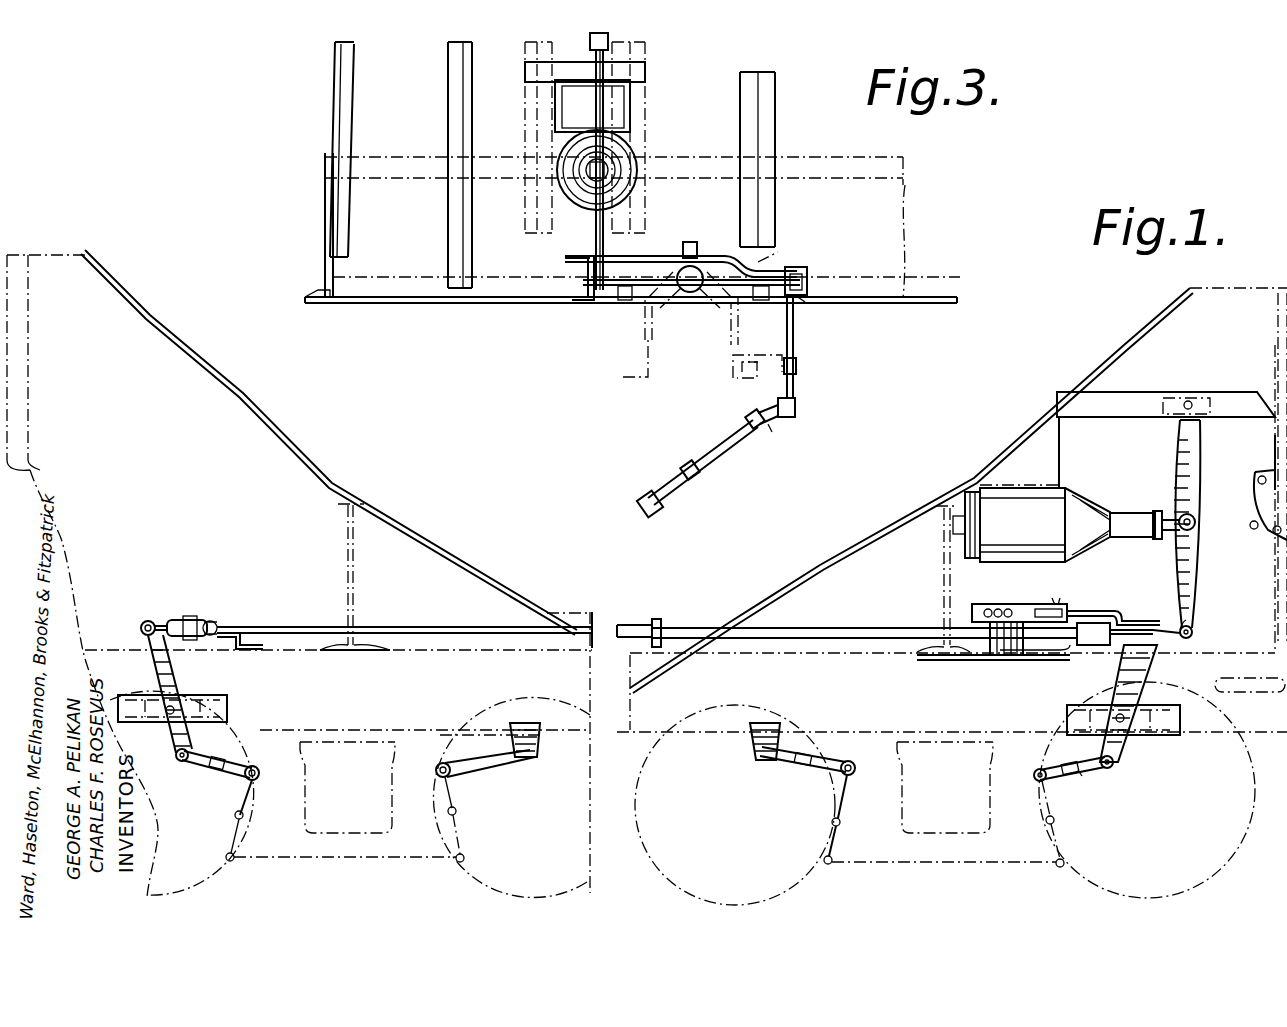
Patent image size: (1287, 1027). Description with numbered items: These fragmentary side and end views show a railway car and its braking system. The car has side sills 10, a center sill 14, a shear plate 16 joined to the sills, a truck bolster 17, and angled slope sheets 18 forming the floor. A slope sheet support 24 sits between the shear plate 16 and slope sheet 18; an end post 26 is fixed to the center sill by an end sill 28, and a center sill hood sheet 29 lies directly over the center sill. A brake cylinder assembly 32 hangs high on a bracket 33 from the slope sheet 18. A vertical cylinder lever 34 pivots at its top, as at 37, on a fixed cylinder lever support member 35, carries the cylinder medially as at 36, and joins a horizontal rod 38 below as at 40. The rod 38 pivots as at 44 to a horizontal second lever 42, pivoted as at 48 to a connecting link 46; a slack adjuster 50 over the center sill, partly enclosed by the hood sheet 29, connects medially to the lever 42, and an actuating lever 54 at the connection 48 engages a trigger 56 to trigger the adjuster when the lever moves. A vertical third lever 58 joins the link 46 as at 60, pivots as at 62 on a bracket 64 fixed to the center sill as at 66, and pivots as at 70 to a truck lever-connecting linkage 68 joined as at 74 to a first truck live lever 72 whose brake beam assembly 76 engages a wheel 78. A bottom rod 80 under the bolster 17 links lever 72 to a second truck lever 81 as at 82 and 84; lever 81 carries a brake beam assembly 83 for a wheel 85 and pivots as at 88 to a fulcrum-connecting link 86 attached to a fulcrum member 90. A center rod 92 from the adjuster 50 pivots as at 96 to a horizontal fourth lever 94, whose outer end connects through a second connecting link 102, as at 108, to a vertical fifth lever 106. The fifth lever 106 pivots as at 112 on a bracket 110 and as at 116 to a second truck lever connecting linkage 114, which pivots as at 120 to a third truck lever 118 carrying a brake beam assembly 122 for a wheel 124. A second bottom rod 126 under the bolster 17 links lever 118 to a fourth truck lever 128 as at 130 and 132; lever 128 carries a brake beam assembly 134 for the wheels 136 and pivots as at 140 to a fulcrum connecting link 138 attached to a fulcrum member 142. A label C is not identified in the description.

In FIG. 3, the side sills 10 is at (308, 298).
In FIG. 3, the center sill 14 is at (633, 358).
In FIG. 1, the center sill 14 is at (402, 693).
In FIG. 1, the shear plate 16 is at (300, 652).
In FIG. 1, the truck bolster 17 is at (304, 826).
In FIG. 1, the slope sheets 18 is at (265, 412).
In FIG. 1, the slope sheet support 24 is at (345, 570).
In FIG. 1, the end post 26 is at (1268, 437).
In FIG. 1, the end sill 28 is at (1255, 665).
In FIG. 3, the center sill hood sheet 29 is at (776, 260).
In FIG. 1, the center sill hood sheet 29 is at (583, 612).
In FIG. 3, the brake cylinder assembly 32 is at (580, 185).
In FIG. 1, the brake cylinder assembly 32 is at (1010, 547).
In FIG. 3, the bracket 33 is at (555, 107).
In FIG. 1, the bracket 33 is at (1043, 455).
In FIG. 3, the cylinder lever 34 is at (605, 115).
In FIG. 1, the cylinder lever 34 is at (1198, 560).
In FIG. 3, the cylinder lever support member 35 is at (622, 72).
In FIG. 1, the cylinder lever support member 35 is at (1132, 396).
In FIG. 3, the connection 36 is at (606, 170).
In FIG. 1, the connection 36 is at (1180, 520).
In FIG. 3, the pivotal connection 37 is at (588, 42).
In FIG. 1, the pivotal connection 37 is at (1192, 402).
In FIG. 3, the rod 38 is at (562, 262).
In FIG. 1, the rod 38 is at (1193, 640).
In FIG. 1, the connection 40 is at (1192, 630).
In FIG. 3, the second lever 42 is at (640, 287).
In FIG. 1, the second lever 42 is at (1080, 645).
In FIG. 3, the pivotal connection 44 is at (586, 294).
In FIG. 3, the connecting link 46 is at (804, 277).
In FIG. 3, the pivotal connection 48 is at (797, 268).
In FIG. 3, the brake regulator 50 is at (688, 292).
In FIG. 1, the brake regulator 50 is at (758, 640).
In FIG. 3, the actuating lever 54 is at (655, 256).
In FIG. 1, the actuating lever 54 is at (1105, 609).
In FIG. 3, the trigger 56 is at (692, 258).
In FIG. 1, the trigger 56 is at (1075, 603).
In FIG. 3, the third lever 58 is at (795, 340).
In FIG. 1, the third lever 58 is at (1147, 676).
In FIG. 3, the connection 60 is at (798, 298).
In FIG. 3, the pivot 62 is at (797, 368).
In FIG. 1, the pivot 62 is at (1124, 722).
In FIG. 3, the bracket 64 is at (758, 355).
In FIG. 1, the bracket 64 is at (1150, 724).
In FIG. 3, the attachment 66 is at (733, 362).
In FIG. 3, the truck lever-connecting linkage 68 is at (775, 420).
In FIG. 1, the truck lever-connecting linkage 68 is at (1080, 772).
In FIG. 3, the pivotal connection 70 is at (797, 408).
In FIG. 1, the pivotal connection 70 is at (1112, 767).
In FIG. 3, the first truck live lever 72 is at (677, 495).
In FIG. 1, the first truck live lever 72 is at (1054, 845).
In FIG. 3, the connection 74 is at (746, 420).
In FIG. 1, the connection 74 is at (1034, 772).
In FIG. 3, the brake beam assembly 76 is at (684, 468).
In FIG. 1, the brake beam assembly 76 is at (1046, 820).
In FIG. 1, the railway car wheel 78 is at (1215, 868).
In FIG. 1, the bottom rod 80 is at (940, 863).
In FIG. 1, the second truck lever 81 is at (848, 795).
In FIG. 1, the pivotal connection 82 is at (1057, 867).
In FIG. 1, the brake beam assembly 83 is at (832, 822).
In FIG. 1, the pivotal connection 84 is at (832, 864).
In FIG. 1, the railway car wheel 85 is at (718, 875).
In FIG. 1, the fulcrum-connecting link 86 is at (820, 749).
In FIG. 1, the pivotal attachment 88 is at (855, 762).
In FIG. 1, the fulcrum member 90 is at (775, 727).
In FIG. 1, the center rod 92 is at (450, 626).
In FIG. 1, the fourth lever 94 is at (200, 622).
In FIG. 1, the pivotal connection 96 is at (188, 618).
In FIG. 1, the second connecting link 102 is at (160, 618).
In FIG. 1, the fifth lever 106 is at (153, 665).
In FIG. 1, the connection 108 is at (140, 628).
In FIG. 1, the bracket 110 is at (215, 692).
In FIG. 1, the pivot 112 is at (176, 706).
In FIG. 1, the second truck lever connecting linkage 114 is at (205, 764).
In FIG. 1, the pivotal connection 116 is at (190, 755).
In FIG. 1, the third truck lever 118 is at (250, 796).
In FIG. 1, the pivotal connection 120 is at (256, 767).
In FIG. 1, the brake beam assembly 122 is at (236, 817).
In FIG. 1, the railway car wheel 124 is at (192, 880).
In FIG. 1, the second bottom rod 126 is at (390, 860).
In FIG. 1, the fourth truck lever 128 is at (462, 833).
In FIG. 1, the pivotal connection 130 is at (233, 860).
In FIG. 1, the pivotal connection 132 is at (459, 863).
In FIG. 1, the brake beam assembly 134 is at (458, 808).
In FIG. 1, the railway car wheels 136 is at (560, 862).
In FIG. 1, the fulcrum connecting link 138 is at (480, 735).
In FIG. 1, the pivotal connection 140 is at (440, 763).
In FIG. 1, the fulcrum member 142 is at (540, 724).
In FIG. 3, the cable C is at (640, 205).